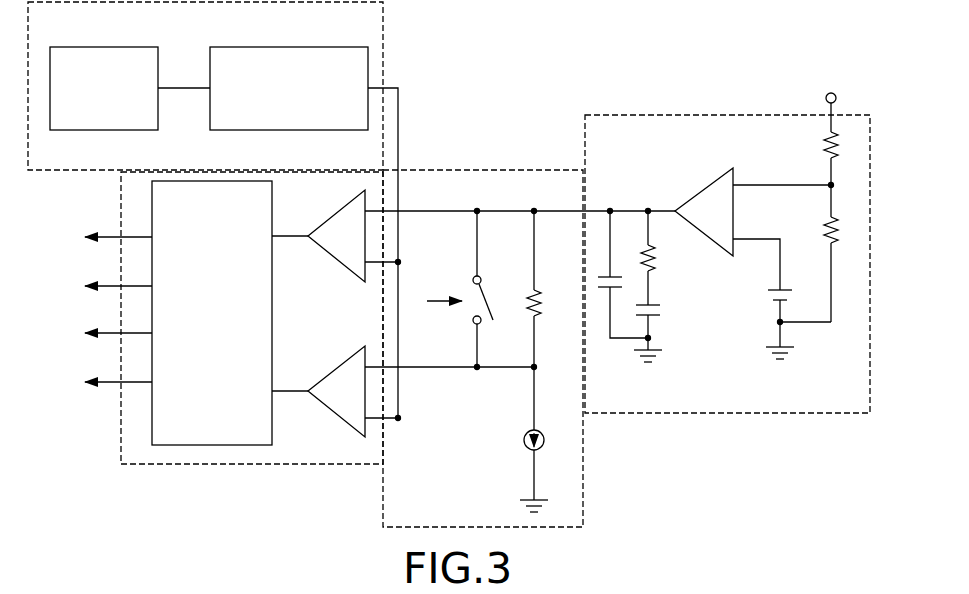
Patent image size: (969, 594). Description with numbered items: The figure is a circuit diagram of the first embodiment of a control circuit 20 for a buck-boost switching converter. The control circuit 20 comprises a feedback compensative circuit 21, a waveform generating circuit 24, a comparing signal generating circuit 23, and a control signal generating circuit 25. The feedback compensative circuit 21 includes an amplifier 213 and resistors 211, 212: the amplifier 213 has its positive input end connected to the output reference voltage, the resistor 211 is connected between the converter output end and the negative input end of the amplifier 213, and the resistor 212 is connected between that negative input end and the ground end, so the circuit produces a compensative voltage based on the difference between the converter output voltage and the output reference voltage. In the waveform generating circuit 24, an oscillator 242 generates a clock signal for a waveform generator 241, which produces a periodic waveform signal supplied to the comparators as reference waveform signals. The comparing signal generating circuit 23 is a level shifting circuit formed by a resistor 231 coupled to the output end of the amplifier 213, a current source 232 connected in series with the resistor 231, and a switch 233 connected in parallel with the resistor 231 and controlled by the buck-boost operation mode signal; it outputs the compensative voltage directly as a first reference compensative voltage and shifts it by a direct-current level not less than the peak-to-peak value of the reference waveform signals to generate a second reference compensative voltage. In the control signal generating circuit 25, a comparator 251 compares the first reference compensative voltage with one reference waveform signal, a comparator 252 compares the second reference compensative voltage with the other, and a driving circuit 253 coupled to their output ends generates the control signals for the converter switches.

The control circuit 20 is at (449, 280).
The feedback compensative circuit 21 is at (727, 220).
The resistor 211 is at (823, 133).
The resistor 212 is at (837, 242).
The amplifier 213 is at (710, 195).
The comparing signal generating circuit 23 is at (520, 306).
The resistor 231 is at (545, 297).
The current source 232 is at (545, 437).
The switch 233 is at (482, 282).
The waveform generating circuit 24 is at (268, 210).
The waveform generator 241 is at (318, 47).
The oscillator 242 is at (122, 47).
The control signal generating circuit 25 is at (219, 358).
The comparator 251 is at (320, 228).
The comparator 252 is at (322, 405).
The driving circuit 253 is at (272, 312).